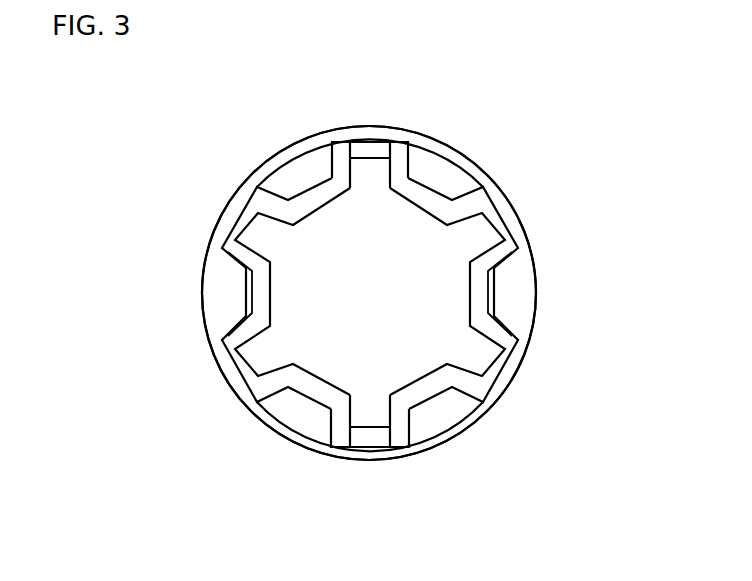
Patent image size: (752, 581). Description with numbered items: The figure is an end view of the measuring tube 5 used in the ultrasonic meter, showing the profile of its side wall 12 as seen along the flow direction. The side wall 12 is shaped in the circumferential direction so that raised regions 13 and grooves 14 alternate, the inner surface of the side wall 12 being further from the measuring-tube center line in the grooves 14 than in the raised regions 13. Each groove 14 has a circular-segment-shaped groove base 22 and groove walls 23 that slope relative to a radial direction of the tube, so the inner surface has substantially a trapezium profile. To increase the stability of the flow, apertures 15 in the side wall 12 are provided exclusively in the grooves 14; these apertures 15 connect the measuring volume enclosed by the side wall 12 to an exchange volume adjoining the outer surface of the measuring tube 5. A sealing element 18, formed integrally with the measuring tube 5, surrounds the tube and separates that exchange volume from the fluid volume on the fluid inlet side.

The measuring tube 5 is at (190, 186).
The side wall 12 is at (483, 292).
The raised regions 13 is at (430, 215).
The grooves 14 is at (364, 170).
The apertures 15 is at (372, 143).
The sealing element 18 is at (451, 167).
The groove base 22 is at (370, 438).
The groove walls 23 is at (338, 428).